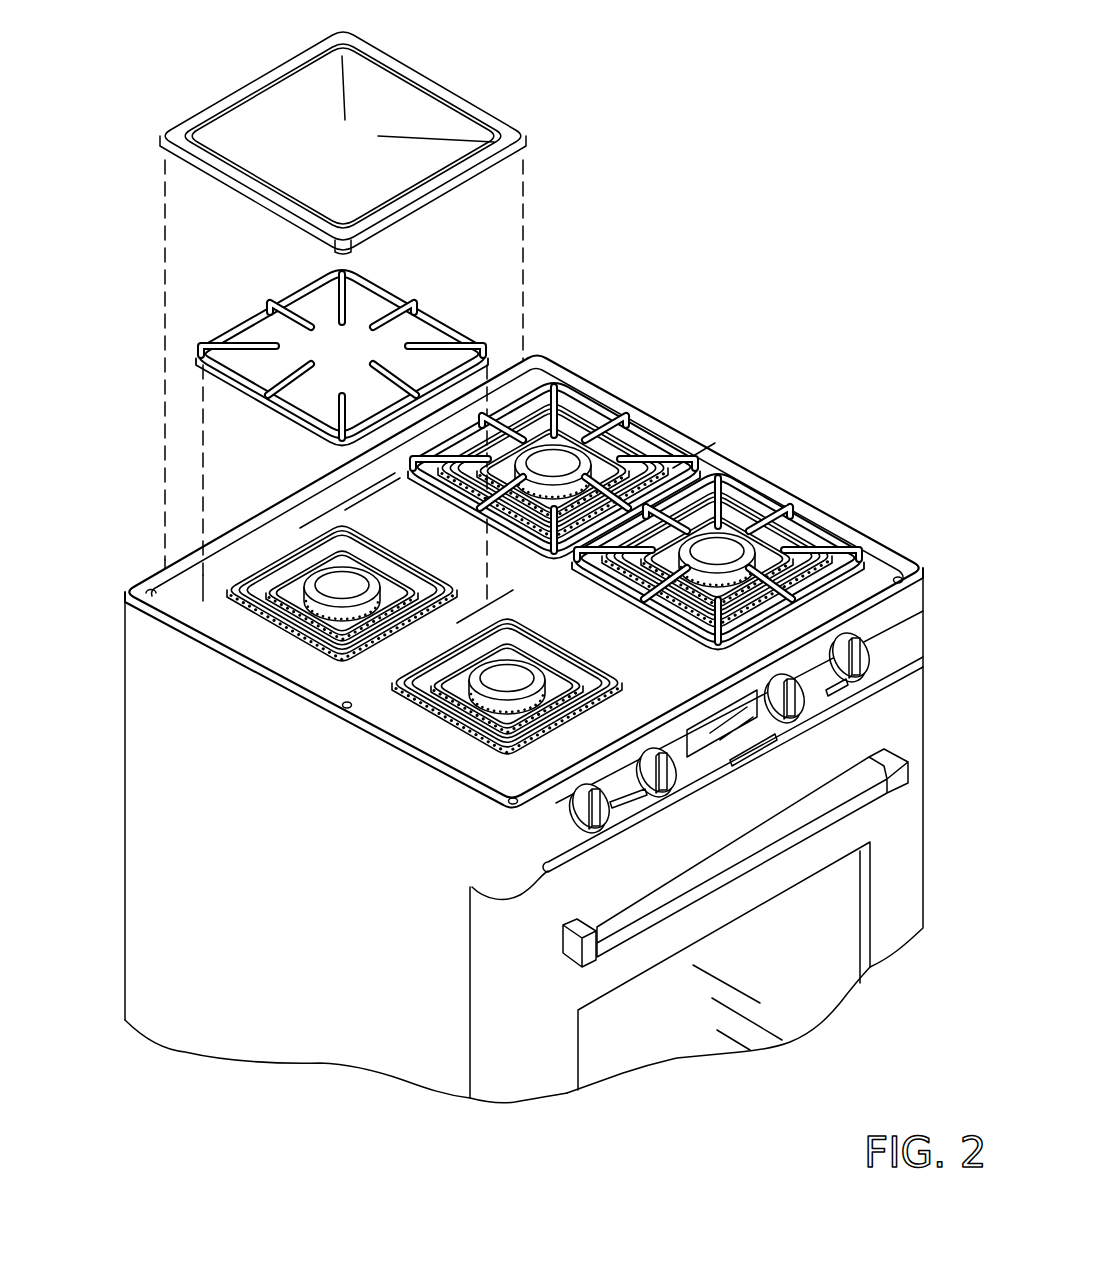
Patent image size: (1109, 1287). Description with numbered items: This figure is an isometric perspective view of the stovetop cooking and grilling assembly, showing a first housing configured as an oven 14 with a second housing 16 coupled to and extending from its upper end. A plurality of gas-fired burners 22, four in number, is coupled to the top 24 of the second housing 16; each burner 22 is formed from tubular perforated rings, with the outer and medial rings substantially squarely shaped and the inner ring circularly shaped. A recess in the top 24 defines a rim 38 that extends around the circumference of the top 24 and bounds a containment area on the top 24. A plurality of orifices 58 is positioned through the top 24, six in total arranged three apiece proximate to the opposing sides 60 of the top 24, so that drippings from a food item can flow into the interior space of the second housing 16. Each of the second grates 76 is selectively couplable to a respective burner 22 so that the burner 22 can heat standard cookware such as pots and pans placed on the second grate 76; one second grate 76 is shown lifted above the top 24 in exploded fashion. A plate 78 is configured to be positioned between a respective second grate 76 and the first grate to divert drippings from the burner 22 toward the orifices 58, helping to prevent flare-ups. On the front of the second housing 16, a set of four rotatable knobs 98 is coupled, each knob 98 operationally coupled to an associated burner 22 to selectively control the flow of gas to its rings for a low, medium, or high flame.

The oven 14 is at (214, 886).
The second housing 16 is at (120, 624).
The burners 22 is at (430, 490).
The top 24 is at (197, 583).
The rim 38 is at (780, 478).
The orifices 58 is at (495, 806).
The opposing sides 60 is at (862, 522).
The second grates 76 is at (740, 482).
The plates 78 is at (423, 72).
The knobs 98 is at (617, 813).